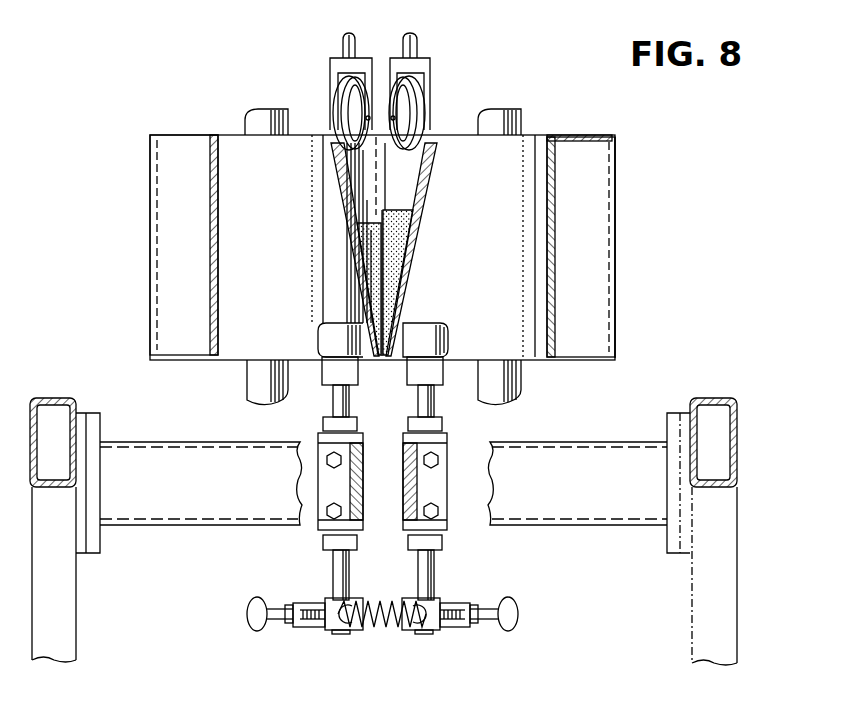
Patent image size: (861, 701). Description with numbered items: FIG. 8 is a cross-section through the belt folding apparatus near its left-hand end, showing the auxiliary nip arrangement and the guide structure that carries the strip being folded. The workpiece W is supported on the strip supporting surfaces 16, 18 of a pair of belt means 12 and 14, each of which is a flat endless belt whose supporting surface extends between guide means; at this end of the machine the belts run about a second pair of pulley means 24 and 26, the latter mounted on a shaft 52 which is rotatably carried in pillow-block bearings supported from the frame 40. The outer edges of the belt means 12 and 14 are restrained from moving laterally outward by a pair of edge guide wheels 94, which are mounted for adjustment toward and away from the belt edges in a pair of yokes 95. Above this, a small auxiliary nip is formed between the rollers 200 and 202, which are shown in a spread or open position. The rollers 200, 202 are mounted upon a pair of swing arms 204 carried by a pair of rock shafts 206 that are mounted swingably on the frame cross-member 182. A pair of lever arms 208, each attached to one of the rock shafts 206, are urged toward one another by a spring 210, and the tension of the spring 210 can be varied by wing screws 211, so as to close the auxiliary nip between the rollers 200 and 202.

The belt means 12 is at (615, 262).
The belt means 14 is at (150, 245).
The strip supporting surface 16 is at (403, 185).
The strip supporting surface 18 is at (360, 177).
The pulley means 24 is at (575, 135).
The pulley means 26 is at (182, 135).
The frame 40 is at (710, 398).
The shaft 52 is at (247, 112).
The edge guide wheels 94 is at (338, 117).
The yokes 95 is at (333, 58).
The workpiece W is at (397, 258).
The frame cross-member 182 is at (618, 520).
The roller 200 is at (427, 332).
The roller 202 is at (327, 332).
The swing arms 204 is at (412, 383).
The rock shafts 206 is at (422, 583).
The lever arms 208 is at (310, 600).
The spring 210 is at (382, 627).
The wing screws 211 is at (253, 627).